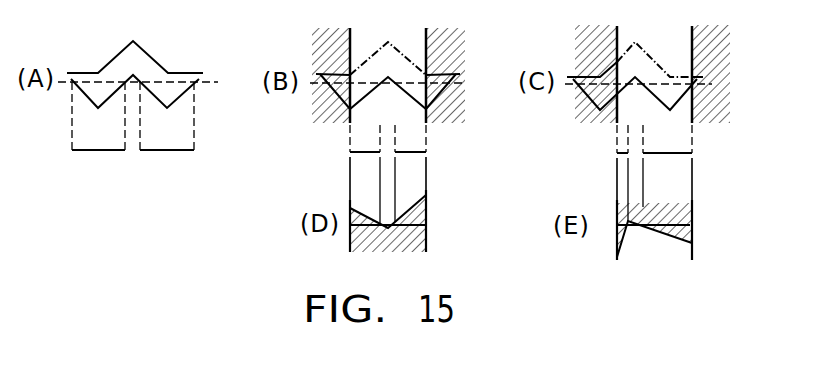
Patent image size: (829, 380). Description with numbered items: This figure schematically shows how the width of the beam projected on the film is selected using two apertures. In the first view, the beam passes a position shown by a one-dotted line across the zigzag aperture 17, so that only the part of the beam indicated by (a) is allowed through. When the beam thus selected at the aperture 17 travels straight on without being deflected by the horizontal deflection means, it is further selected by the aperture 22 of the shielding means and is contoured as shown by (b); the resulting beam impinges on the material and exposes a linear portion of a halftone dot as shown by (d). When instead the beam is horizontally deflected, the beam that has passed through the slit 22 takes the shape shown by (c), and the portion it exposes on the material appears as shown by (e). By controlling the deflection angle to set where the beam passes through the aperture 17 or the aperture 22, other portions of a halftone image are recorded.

The aperture 17 is at (140, 48).
The aperture 22 is at (425, 45).
The part of the beam a is at (194, 150).
The contoured beam b is at (426, 152).
The contoured beam c is at (692, 153).
The exposed linear portion of a halftone dot d is at (426, 218).
The exposed portion e is at (691, 236).